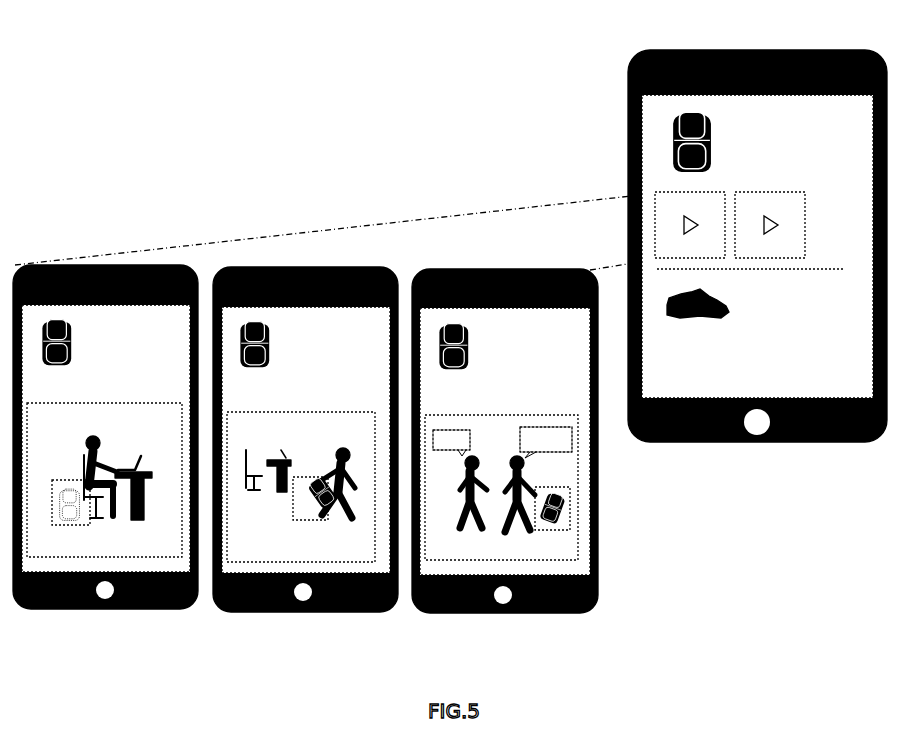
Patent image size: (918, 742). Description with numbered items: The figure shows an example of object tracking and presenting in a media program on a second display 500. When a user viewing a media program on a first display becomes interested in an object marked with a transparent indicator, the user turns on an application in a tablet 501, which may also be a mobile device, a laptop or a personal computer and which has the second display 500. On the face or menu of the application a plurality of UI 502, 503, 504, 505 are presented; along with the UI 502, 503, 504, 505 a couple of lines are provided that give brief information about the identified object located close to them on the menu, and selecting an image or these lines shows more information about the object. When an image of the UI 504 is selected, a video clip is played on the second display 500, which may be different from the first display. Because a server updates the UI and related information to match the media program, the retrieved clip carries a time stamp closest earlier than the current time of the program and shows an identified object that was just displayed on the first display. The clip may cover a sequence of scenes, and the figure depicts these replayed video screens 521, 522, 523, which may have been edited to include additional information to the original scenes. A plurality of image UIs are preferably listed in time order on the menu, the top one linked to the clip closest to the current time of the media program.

The second display 500 is at (650, 139).
The tablet 501 is at (738, 39).
The UI 502 is at (716, 130).
The UI 503 is at (718, 287).
The image UI 504 is at (660, 218).
The UI 505 is at (807, 208).
The first replay video screen 521 is at (122, 265).
The second replay video screen 522 is at (318, 267).
The third replay video screen 523 is at (518, 269).